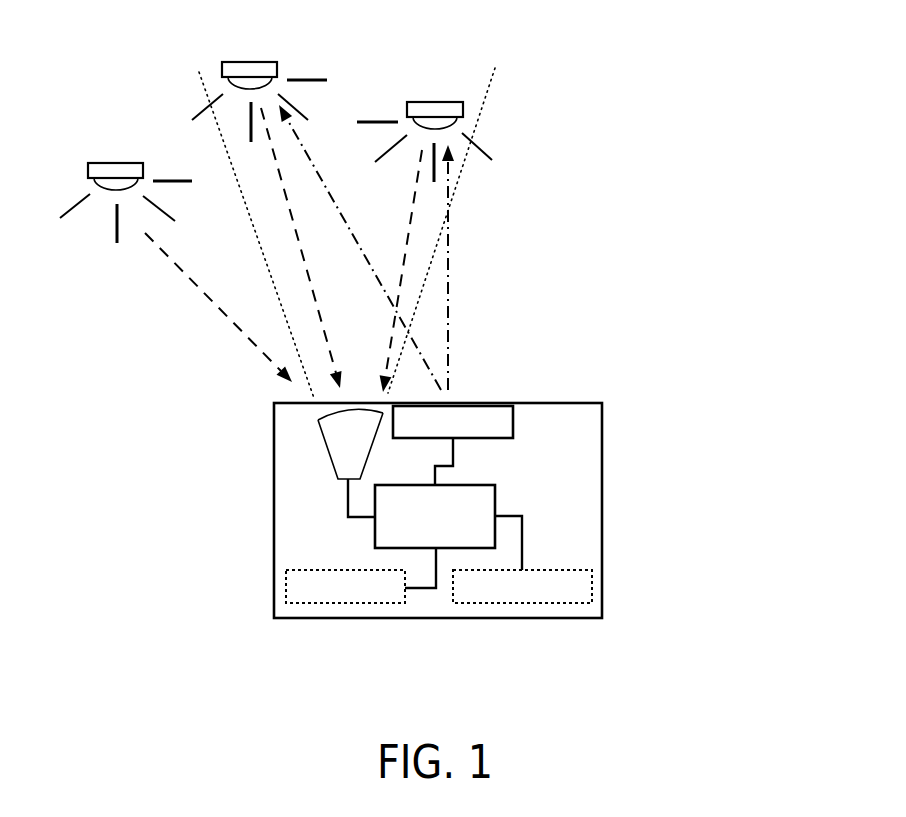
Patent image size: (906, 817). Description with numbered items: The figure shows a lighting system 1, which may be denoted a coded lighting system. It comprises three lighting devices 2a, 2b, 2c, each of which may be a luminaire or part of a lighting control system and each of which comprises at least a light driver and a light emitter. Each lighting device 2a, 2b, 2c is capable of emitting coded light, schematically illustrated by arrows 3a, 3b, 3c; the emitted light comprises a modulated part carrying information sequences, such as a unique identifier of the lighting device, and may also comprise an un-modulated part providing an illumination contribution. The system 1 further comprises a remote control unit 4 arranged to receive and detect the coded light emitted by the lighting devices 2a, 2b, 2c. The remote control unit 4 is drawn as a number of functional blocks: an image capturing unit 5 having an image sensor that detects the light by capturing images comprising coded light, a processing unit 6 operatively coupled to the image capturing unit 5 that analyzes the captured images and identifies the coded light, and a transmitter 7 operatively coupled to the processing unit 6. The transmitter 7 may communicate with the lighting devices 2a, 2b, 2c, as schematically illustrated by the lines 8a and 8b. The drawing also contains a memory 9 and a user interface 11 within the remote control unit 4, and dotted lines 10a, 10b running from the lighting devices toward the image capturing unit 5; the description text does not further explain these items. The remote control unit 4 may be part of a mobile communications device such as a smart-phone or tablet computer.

The lighting system 1 is at (675, 181).
The lighting device 2a is at (433, 102).
The lighting device 2b is at (249, 62).
The lighting device 2c is at (120, 163).
The coded light 3a is at (401, 277).
The coded light 3b is at (278, 164).
The coded light 3c is at (195, 282).
The remote control unit 4 is at (274, 508).
The image capturing unit 5 is at (327, 447).
The processing unit 6 is at (495, 490).
The transmitter 7 is at (513, 422).
The communication from transmitter to lighting device 8a is at (449, 252).
The communication from transmitter to lighting device 8b is at (336, 172).
The memory 9 is at (348, 604).
The line of sight 10a is at (492, 83).
The line of sight 10b is at (200, 73).
The user interface 11 is at (592, 586).